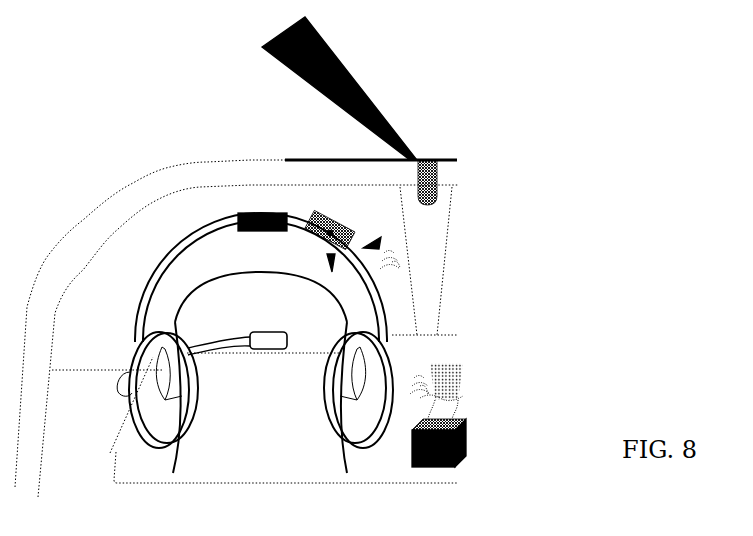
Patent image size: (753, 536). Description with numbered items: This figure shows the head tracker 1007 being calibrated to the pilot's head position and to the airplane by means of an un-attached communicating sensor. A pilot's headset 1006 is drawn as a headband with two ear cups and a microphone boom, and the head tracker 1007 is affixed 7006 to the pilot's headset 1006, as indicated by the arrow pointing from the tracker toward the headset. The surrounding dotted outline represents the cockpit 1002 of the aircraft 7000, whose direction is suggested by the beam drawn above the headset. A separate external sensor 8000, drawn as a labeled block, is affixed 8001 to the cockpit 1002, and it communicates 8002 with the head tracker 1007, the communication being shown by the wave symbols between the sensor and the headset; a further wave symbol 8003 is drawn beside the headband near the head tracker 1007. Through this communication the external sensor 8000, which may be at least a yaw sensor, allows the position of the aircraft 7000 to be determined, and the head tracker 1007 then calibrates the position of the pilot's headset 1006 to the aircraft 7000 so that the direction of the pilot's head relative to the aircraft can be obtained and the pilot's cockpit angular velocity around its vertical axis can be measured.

The cockpit 1002 is at (163, 210).
The pilot's headset 1006 is at (140, 415).
The head tracker 1007 is at (332, 210).
The aircraft 7000 is at (367, 233).
The affixing of head tracker to headset 7006 is at (318, 237).
The sound wave indication near headset 8003 is at (398, 250).
The affixing of external sensor to cockpit 8001 is at (452, 362).
The communication between external sensor and head tracker 8002 is at (425, 360).
The external sensor 8000 is at (467, 427).